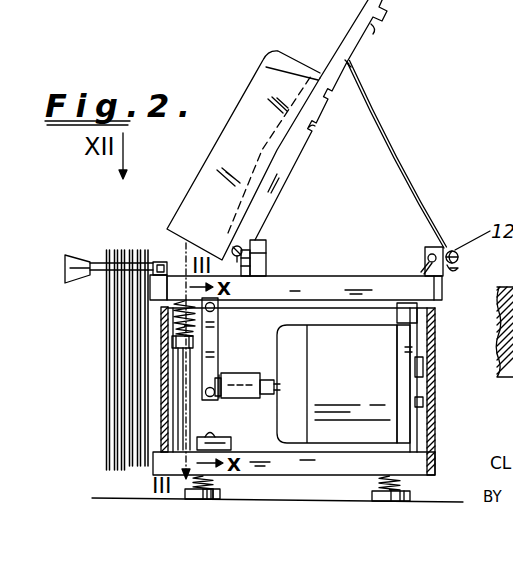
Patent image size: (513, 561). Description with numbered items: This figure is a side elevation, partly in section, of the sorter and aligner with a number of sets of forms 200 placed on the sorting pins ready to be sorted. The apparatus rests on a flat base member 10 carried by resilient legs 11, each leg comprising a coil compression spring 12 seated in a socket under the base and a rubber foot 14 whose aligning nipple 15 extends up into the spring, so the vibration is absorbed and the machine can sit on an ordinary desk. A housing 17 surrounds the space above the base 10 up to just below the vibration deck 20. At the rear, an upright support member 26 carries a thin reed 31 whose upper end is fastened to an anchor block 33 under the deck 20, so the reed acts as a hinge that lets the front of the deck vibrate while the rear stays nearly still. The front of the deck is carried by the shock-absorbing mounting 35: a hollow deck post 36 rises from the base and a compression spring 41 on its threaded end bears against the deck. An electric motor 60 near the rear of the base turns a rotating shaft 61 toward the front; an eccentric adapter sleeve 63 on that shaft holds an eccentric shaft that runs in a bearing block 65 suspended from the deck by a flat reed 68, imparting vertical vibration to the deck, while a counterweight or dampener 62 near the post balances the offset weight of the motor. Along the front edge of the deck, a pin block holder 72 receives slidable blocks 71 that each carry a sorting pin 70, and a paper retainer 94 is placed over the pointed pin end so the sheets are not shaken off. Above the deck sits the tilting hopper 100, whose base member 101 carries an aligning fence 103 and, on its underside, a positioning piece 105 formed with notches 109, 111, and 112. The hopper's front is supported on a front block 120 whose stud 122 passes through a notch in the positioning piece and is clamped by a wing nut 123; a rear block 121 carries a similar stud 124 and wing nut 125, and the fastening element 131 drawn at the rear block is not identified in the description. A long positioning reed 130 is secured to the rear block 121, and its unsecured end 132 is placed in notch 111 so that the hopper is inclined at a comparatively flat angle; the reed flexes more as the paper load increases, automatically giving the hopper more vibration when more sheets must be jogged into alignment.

The base member 10 is at (420, 460).
The resilient legs 11 is at (201, 504).
The coil compression spring 12 is at (215, 483).
The rubber foot 14 is at (190, 494).
The aligning nipple 15 is at (214, 496).
The housing 17 is at (437, 402).
The vibration deck 20 is at (368, 276).
The upright support member 26 is at (397, 376).
The reed 31 is at (412, 318).
The anchor block 33 is at (400, 312).
The shock-absorbing mounting 35 is at (192, 414).
The deck post 36 is at (180, 438).
The compression spring 41 is at (196, 312).
The electric motor 60 is at (342, 396).
The rotating shaft 61 is at (265, 381).
The counterweight or dampener 62 is at (232, 444).
The eccentric adapter sleeve 63 is at (246, 374).
The bearing block 65 is at (222, 372).
The reed 68 is at (211, 339).
The sorting pin 70 is at (97, 262).
The slidable block 71 is at (168, 259).
The pin block holder 72 is at (160, 261).
The paper retainer 94 is at (63, 262).
The hopper 100 is at (307, 130).
The base member 101 is at (341, 40).
The aligning fence 103 is at (226, 152).
The positioning piece 105 is at (295, 160).
The notch 109 is at (317, 124).
The notch 111 is at (352, 65).
The notch 112 is at (376, 28).
The front block 120 is at (267, 246).
The rear block 121 is at (425, 248).
The stud 122 is at (251, 262).
The wing nut 123 is at (243, 246).
The stud 124 is at (451, 267).
The wing nut 125 is at (428, 259).
The positioning reed 130 is at (419, 165).
The pulley 131 is at (448, 247).
The unsecured end 132 is at (351, 62).
The sets of forms 200 is at (104, 378).